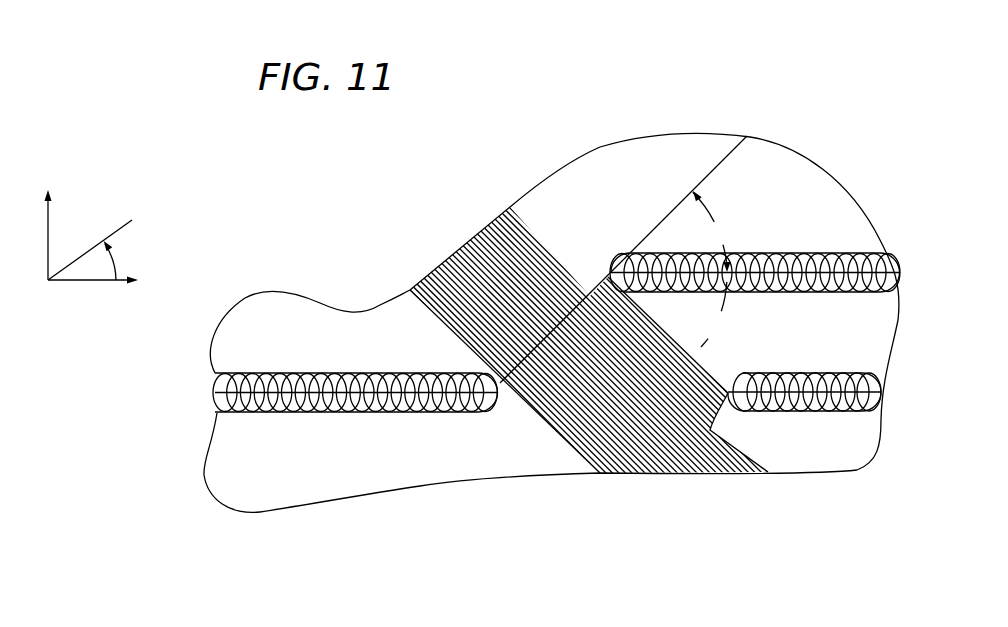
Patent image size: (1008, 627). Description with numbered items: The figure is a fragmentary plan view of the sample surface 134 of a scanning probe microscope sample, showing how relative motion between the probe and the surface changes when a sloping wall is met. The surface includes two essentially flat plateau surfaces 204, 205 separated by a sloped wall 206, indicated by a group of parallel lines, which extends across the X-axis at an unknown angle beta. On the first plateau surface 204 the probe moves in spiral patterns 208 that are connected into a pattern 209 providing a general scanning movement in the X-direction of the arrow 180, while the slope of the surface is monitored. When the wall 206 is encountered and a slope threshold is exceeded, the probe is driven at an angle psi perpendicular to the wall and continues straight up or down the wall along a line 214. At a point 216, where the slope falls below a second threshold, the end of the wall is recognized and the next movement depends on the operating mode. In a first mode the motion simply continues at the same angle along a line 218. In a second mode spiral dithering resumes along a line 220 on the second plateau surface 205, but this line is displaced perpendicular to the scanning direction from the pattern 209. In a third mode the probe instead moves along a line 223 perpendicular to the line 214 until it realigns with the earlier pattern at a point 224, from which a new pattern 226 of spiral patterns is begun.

The sample surface 134 is at (470, 448).
The arrow indicating X-direction 180 is at (79, 284).
The first plateau surface 204 is at (233, 462).
The second plateau surface 205 is at (773, 170).
The sloped wall 206 is at (497, 278).
The spiral patterns 208 is at (262, 412).
The pattern of spiral patterns 209 is at (248, 355).
The line at angle psi 214 is at (552, 295).
The point at end of wall 216 is at (610, 277).
The line of continued movement at angle psi 218 is at (690, 192).
The line of spiral patterns on second plateau 220 is at (792, 227).
The line perpendicular to line 214 223 is at (701, 347).
The point of realignment 224 is at (738, 470).
The new pattern of spiral patterns 226 is at (823, 432).